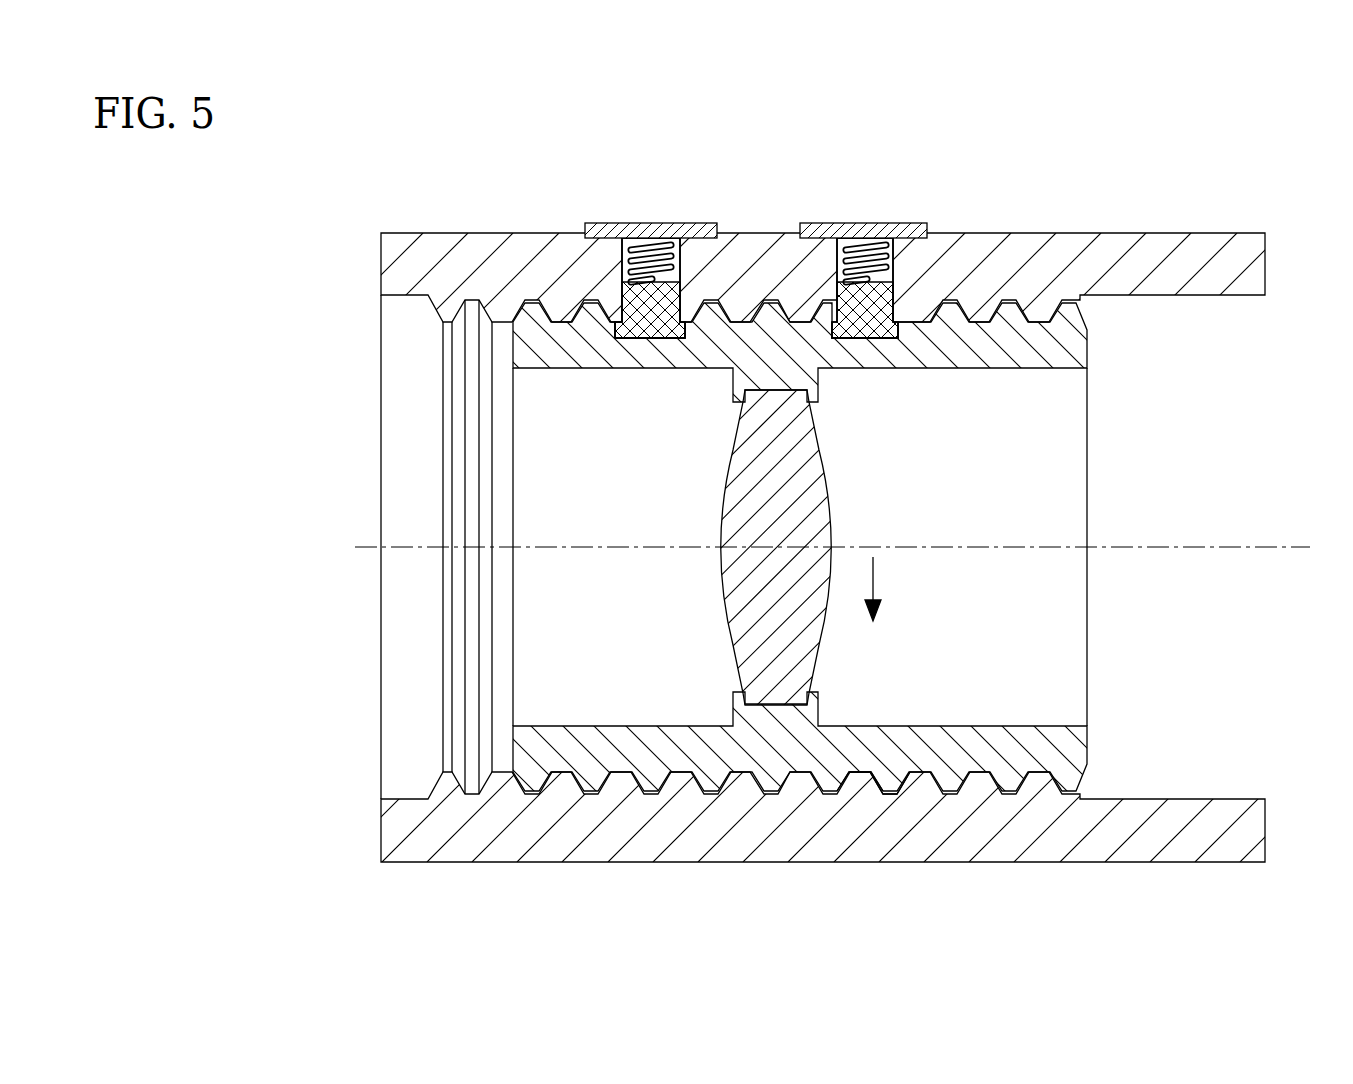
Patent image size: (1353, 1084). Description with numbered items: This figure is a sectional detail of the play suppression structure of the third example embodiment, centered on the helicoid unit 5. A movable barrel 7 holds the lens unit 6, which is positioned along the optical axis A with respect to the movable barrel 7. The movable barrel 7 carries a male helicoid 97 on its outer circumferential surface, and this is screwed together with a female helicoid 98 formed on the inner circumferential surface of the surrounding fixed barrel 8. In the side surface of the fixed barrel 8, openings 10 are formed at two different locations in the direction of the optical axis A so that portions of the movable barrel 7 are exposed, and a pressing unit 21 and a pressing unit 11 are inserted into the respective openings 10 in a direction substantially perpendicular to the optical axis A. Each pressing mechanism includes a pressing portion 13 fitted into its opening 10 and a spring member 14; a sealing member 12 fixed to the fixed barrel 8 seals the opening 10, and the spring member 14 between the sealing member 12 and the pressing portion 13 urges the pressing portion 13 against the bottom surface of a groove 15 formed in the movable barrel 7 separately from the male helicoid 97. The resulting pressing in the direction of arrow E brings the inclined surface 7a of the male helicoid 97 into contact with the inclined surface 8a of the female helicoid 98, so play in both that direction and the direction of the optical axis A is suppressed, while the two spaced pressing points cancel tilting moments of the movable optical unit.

The helicoid unit 5 is at (357, 175).
The lens unit 6 is at (776, 707).
The movable barrel 7 is at (1010, 338).
The inclined surface of male helicoid 7a is at (878, 776).
The fixed barrel 8 is at (1176, 252).
The inclined surface of female helicoid 8a is at (879, 797).
The opening 10 is at (621, 288).
The pressing unit 11 is at (937, 153).
The sealing member 12 is at (610, 222).
The pressing portion 13 is at (673, 300).
The spring member 14 is at (651, 258).
The groove 15 is at (624, 342).
The pressing unit 21 is at (722, 163).
The male helicoid 97 is at (497, 318).
The female helicoid 98 is at (450, 318).
The optical axis A is at (365, 548).
The arrow E is at (872, 606).